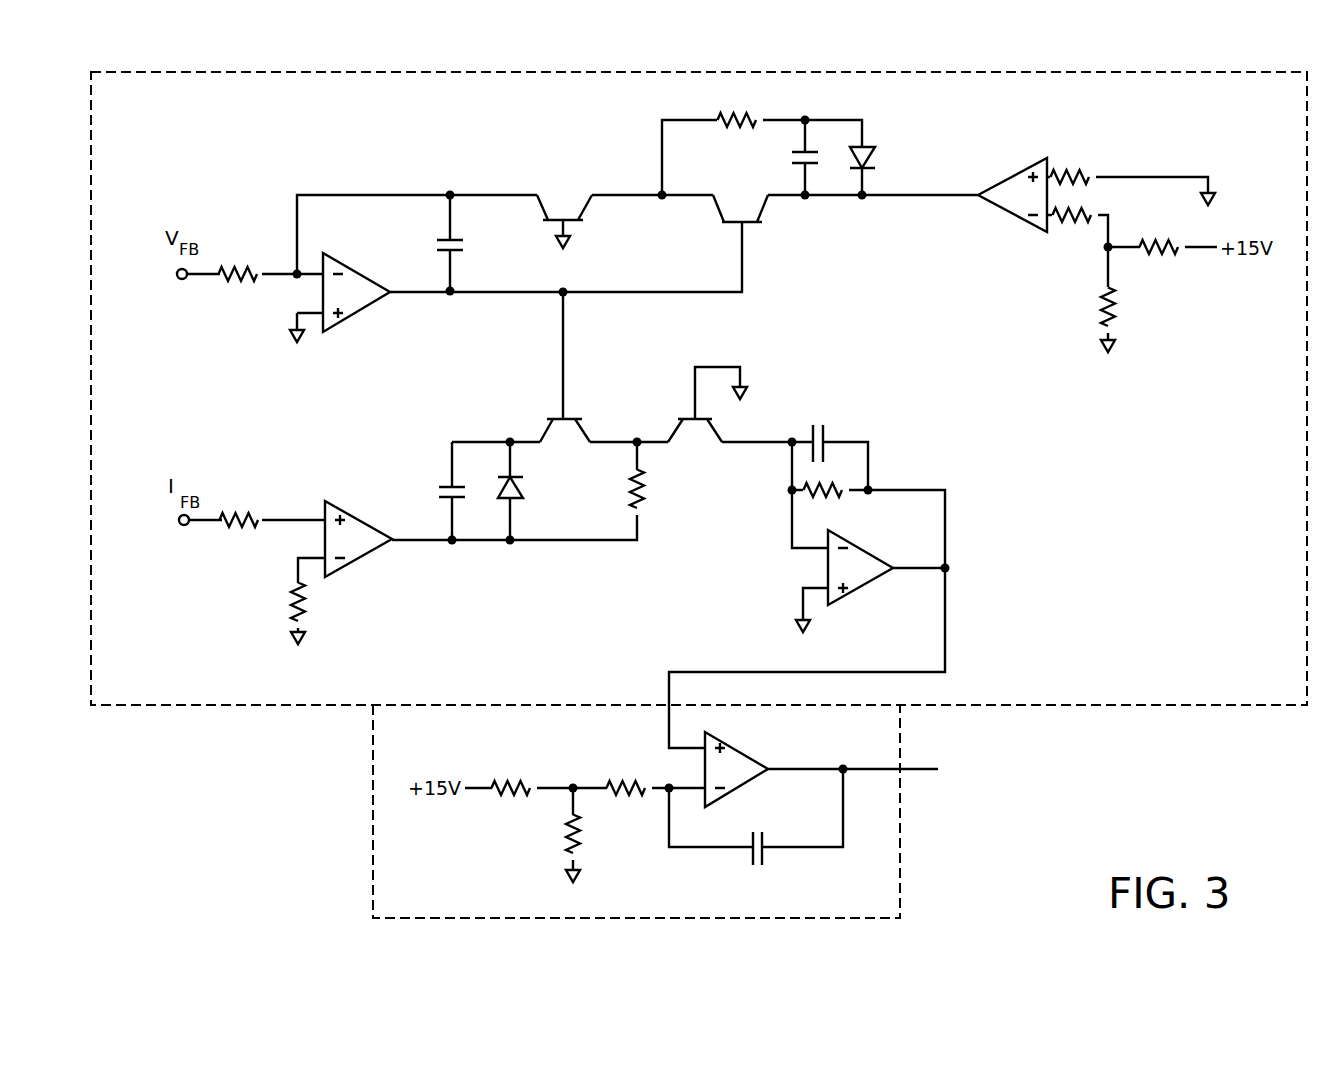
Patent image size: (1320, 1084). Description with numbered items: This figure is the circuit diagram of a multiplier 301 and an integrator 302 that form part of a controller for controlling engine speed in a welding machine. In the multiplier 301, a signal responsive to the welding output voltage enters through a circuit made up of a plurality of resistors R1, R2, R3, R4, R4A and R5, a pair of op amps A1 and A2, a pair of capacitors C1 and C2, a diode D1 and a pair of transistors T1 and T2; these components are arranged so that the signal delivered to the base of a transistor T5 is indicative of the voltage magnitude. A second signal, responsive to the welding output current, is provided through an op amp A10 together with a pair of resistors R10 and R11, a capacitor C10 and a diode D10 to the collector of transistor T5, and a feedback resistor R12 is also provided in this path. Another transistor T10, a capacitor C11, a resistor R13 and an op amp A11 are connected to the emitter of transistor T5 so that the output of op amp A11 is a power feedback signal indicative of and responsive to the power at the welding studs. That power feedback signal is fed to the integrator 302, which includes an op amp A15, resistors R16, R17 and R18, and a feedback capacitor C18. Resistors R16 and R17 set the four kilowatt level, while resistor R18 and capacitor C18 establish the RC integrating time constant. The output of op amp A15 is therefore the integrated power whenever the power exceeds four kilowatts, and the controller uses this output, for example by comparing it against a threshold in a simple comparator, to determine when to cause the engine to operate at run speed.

The resistor R1 is at (238, 262).
The capacitor C1 is at (468, 248).
The op amp A1 is at (357, 312).
The transistor T1 is at (564, 205).
The transistor T2 is at (740, 208).
The resistor R2 is at (737, 108).
The capacitor C2 is at (786, 160).
The diode D1 is at (881, 159).
The op amp A2 is at (1013, 173).
The resistor R3 is at (1070, 164).
The resistor R4A is at (1075, 227).
The resistor R4 is at (1159, 235).
The resistor R5 is at (1122, 307).
The transistor T5 is at (573, 418).
The transistor T10 is at (715, 436).
The capacitor C10 is at (429, 495).
The diode D10 is at (534, 492).
The feedback resistor R12 is at (619, 489).
The capacitor C11 is at (819, 430).
The resistor R13 is at (825, 505).
The op amp A11 is at (878, 580).
The op amp A10 is at (342, 505).
The resistor R10 is at (241, 508).
The resistor R11 is at (319, 602).
The op amp A15 is at (740, 750).
The resistor R16 is at (512, 776).
The resistor R18 is at (629, 776).
The resistor R17 is at (552, 835).
The feedback capacitor C18 is at (758, 863).
The multiplier 301 is at (1000, 705).
The integrator 302 is at (900, 865).